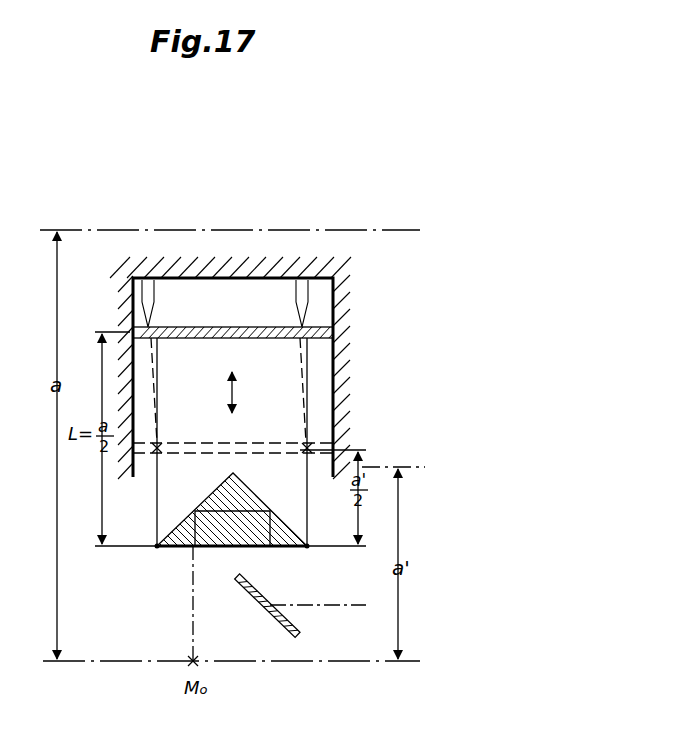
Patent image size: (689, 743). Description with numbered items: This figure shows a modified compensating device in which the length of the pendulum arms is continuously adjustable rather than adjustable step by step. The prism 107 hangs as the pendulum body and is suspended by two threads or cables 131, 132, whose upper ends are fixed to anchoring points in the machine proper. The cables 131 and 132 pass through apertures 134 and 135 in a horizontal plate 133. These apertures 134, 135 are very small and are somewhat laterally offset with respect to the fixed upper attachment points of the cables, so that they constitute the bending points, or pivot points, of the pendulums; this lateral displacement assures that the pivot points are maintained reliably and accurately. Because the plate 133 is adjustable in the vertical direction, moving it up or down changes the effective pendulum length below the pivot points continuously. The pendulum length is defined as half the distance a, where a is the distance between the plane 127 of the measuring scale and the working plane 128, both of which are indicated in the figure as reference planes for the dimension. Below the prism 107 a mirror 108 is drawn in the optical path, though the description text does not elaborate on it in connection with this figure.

The prism 107 is at (246, 505).
The mirror 108 is at (266, 637).
The plane of the measuring scale 127 is at (122, 659).
The working plane 128 is at (237, 228).
The thread or cable 131 is at (162, 384).
The thread or cable 132 is at (303, 392).
The horizontal plate 133 is at (222, 336).
The aperture 134 is at (150, 332).
The aperture 135 is at (307, 330).